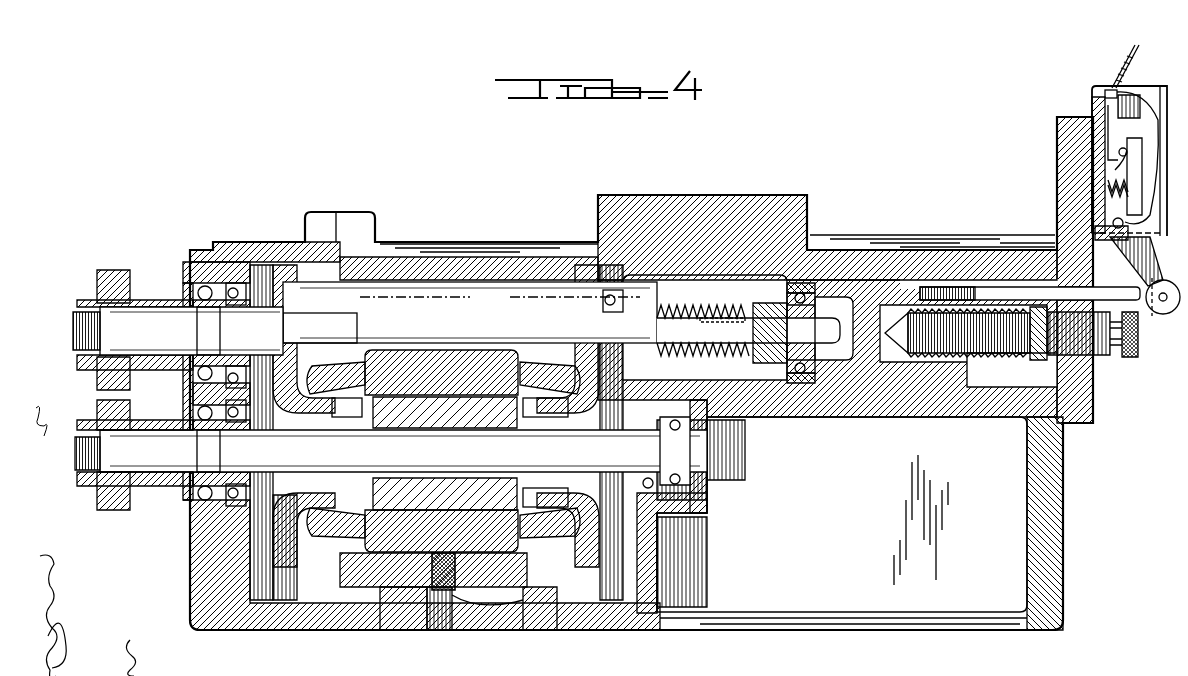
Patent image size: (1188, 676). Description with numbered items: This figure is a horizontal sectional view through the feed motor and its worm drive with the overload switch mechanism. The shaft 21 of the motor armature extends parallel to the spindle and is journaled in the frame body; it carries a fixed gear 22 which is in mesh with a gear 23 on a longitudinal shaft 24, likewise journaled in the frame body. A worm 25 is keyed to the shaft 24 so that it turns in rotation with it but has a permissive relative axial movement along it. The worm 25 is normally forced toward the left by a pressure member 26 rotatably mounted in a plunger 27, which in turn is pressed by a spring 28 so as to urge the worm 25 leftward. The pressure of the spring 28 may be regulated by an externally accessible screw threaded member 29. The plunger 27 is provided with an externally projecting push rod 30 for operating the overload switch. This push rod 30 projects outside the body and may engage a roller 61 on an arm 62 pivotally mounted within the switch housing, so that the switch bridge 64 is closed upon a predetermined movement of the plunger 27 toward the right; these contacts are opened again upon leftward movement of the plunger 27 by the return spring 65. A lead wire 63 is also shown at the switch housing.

The shaft 21 is at (172, 460).
The gear 22 is at (100, 405).
The gear 23 is at (102, 288).
The longitudinal shaft 24 is at (472, 328).
The worm 25 is at (688, 352).
The pressure member 26 is at (768, 356).
The plunger 27 is at (868, 272).
The spring 28 is at (969, 314).
The screw threaded member 29 is at (1095, 350).
The push rod 30 is at (1018, 289).
The roller 61 is at (1163, 315).
The arm 62 is at (1155, 281).
The lead wire 63 is at (1143, 65).
The switch bridge 64 is at (1117, 148).
The return spring 65 is at (1092, 188).